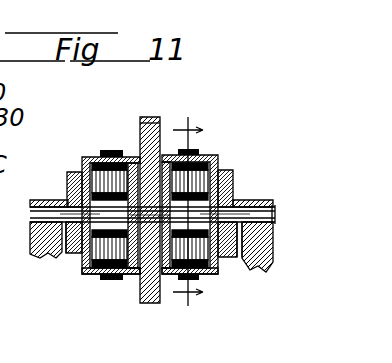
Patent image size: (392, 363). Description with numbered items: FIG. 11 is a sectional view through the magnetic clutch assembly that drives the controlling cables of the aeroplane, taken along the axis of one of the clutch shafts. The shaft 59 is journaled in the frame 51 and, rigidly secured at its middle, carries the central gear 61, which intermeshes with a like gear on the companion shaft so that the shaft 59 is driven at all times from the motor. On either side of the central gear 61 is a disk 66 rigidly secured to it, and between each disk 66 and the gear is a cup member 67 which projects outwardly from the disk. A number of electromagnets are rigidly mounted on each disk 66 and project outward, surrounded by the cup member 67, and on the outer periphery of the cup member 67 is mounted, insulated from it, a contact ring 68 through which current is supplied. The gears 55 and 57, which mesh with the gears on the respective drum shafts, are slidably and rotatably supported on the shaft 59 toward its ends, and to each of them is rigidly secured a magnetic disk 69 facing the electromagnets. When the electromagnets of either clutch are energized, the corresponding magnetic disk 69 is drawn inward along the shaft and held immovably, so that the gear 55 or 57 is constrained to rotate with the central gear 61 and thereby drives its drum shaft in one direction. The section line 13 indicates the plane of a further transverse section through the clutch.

The section line 13 is at (203, 212).
The frame 51 is at (258, 254).
The gear 55 is at (235, 188).
The gear 57 is at (70, 183).
The shaft 59 is at (272, 215).
The central gear 61 is at (152, 302).
The disk 66 is at (128, 268).
The cup member 67 is at (86, 155).
The contact ring 68 is at (113, 152).
The magnetic disk 69 is at (86, 267).